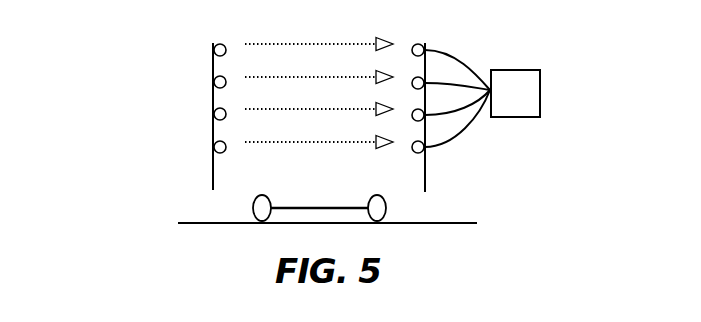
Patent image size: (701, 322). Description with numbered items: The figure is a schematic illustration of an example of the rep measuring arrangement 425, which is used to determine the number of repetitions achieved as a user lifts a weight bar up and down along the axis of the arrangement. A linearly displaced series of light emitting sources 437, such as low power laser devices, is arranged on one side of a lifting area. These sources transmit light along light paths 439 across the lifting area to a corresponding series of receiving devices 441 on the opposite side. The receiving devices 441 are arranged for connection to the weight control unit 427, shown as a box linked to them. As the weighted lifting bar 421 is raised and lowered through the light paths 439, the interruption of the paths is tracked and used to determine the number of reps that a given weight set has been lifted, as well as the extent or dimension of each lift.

The rep measuring arrangement 425 is at (136, 110).
The light emitting sources 437 is at (213, 49).
The light paths 439 is at (315, 43).
The receiving devices 441 is at (427, 43).
The weight control unit 427 is at (542, 78).
The weighted lifting bar 421 is at (305, 208).